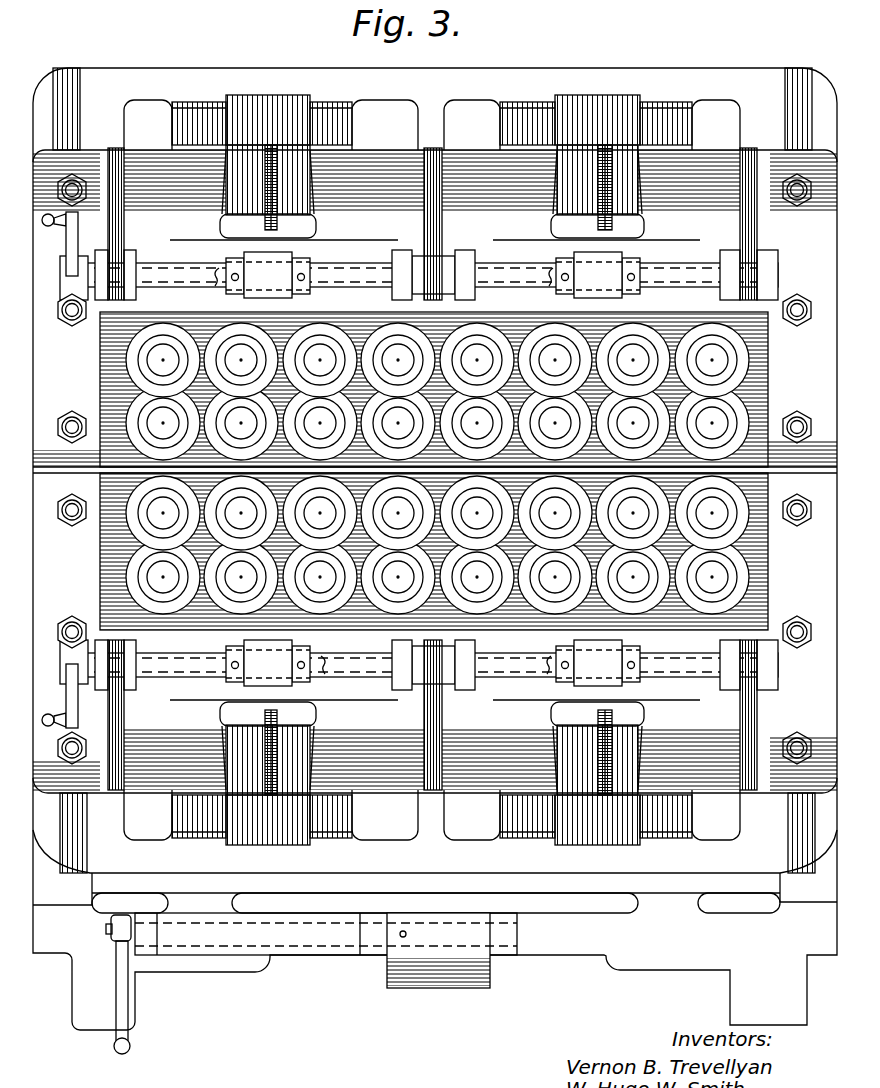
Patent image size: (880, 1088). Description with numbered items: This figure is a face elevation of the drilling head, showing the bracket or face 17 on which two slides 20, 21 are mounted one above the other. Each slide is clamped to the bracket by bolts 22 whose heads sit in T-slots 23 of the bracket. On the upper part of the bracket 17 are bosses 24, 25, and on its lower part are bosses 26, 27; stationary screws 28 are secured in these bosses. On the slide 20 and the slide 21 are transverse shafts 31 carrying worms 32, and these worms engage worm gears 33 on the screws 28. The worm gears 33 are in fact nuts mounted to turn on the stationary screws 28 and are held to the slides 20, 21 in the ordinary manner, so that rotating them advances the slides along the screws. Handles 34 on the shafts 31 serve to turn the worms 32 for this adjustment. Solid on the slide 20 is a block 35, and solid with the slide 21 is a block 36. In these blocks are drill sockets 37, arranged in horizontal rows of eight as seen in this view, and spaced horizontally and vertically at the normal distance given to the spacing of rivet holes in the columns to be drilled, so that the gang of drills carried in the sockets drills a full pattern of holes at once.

The bracket or face 17 is at (133, 70).
The slide 20 is at (379, 165).
The slide 21 is at (490, 788).
The bolts 22 is at (69, 322).
The T-slots 23 is at (64, 74).
The boss 24 is at (259, 99).
The boss 25 is at (592, 162).
The boss 26 is at (273, 840).
The boss 27 is at (618, 840).
The stationary screws 28 is at (286, 236).
The transverse shafts 31 is at (174, 272).
The worms 32 is at (300, 250).
The worm gears 33 is at (316, 284).
The handles 34 is at (70, 239).
The block 35 is at (112, 369).
The block 36 is at (112, 554).
The drill sockets 37 is at (549, 340).